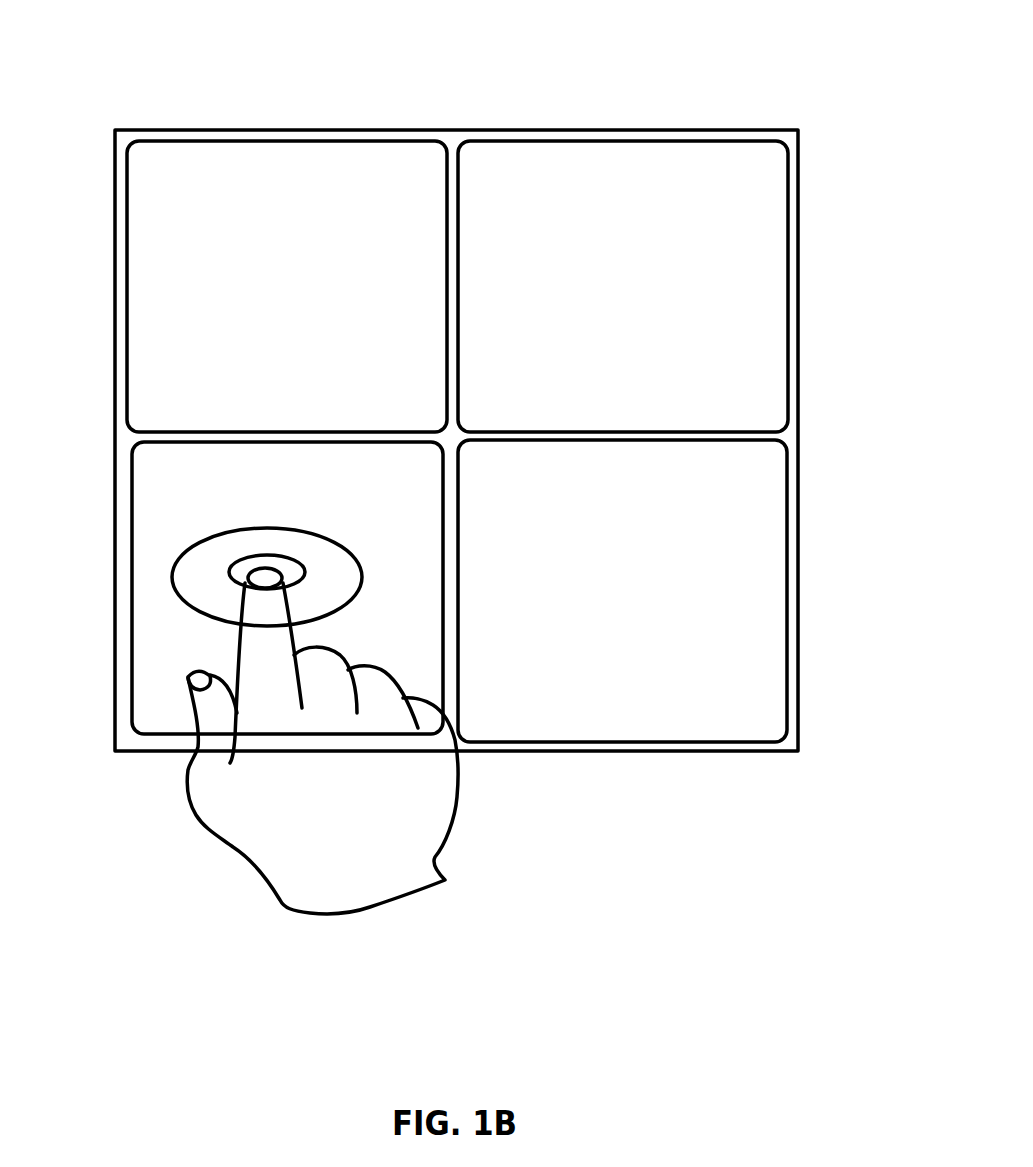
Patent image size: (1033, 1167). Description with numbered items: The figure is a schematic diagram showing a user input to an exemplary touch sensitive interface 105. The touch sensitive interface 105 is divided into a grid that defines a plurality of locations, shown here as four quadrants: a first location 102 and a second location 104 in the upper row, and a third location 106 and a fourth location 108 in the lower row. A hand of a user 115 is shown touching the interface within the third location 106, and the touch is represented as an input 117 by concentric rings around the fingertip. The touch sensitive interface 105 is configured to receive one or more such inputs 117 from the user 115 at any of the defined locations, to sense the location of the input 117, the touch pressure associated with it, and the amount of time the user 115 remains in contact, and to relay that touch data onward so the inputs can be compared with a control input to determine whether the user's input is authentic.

The first location 102 is at (173, 235).
The second location 104 is at (623, 177).
The touch sensitive interface 105 is at (228, 137).
The third location 106 is at (155, 525).
The fourth location 108 is at (675, 712).
The user 115 is at (230, 848).
The input 117 is at (305, 528).